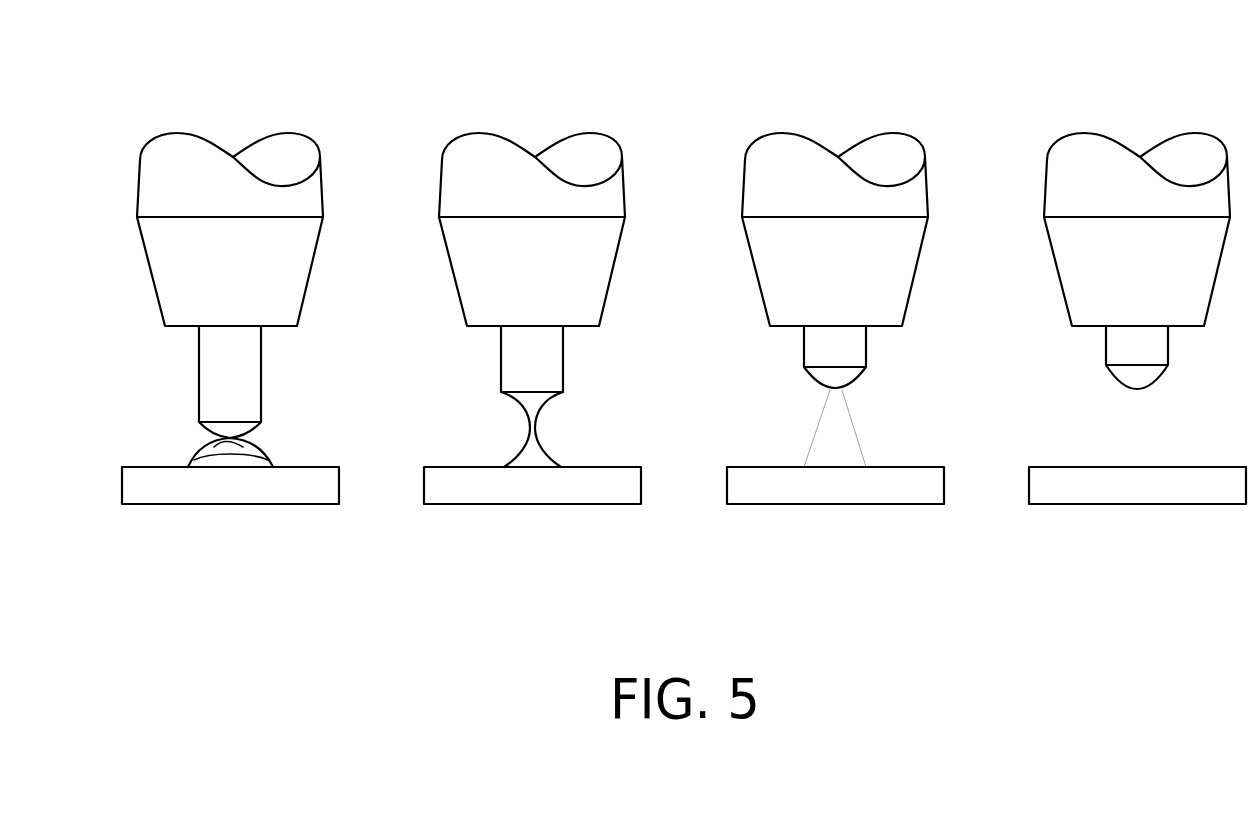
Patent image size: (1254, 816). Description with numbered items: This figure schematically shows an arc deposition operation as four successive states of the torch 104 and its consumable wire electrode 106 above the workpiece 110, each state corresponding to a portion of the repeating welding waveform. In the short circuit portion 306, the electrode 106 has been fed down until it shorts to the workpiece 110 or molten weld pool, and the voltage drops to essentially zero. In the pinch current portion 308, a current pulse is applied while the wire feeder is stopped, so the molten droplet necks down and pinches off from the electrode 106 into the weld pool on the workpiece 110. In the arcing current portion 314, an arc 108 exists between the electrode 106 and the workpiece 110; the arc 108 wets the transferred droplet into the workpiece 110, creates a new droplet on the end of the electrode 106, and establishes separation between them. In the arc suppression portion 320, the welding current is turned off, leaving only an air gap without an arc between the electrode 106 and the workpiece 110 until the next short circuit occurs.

The torch 104 is at (266, 132).
The electrode 106 is at (199, 343).
The arc 108 is at (890, 392).
The workpiece 110 is at (242, 504).
The short circuit portion 306 is at (171, 540).
The pinch current portion 308 is at (517, 388).
The arcing current portion 314 is at (820, 388).
The arc suppression portion 320 is at (1122, 388).